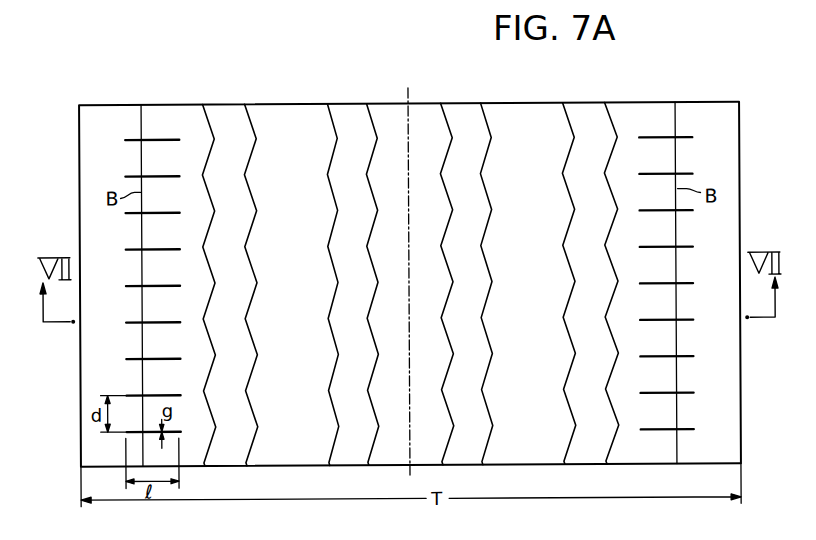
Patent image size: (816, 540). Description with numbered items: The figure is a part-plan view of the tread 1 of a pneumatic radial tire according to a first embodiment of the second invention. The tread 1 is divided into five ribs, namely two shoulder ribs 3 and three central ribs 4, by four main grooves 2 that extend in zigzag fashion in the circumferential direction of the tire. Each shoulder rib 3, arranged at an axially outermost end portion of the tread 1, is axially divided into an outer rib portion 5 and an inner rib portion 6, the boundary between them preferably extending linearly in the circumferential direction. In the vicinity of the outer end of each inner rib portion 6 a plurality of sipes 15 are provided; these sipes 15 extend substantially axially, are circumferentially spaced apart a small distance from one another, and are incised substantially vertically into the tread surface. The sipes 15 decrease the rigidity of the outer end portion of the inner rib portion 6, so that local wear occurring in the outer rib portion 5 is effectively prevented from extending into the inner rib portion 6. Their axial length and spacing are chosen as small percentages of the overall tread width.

The tread 1 is at (413, 70).
The main groove 2 is at (227, 109).
The shoulder rib 3 is at (200, 88).
The rib 4 is at (293, 109).
The outer rib portion 5 is at (115, 133).
The inner rib portion 6 is at (178, 133).
The sipe 15 is at (134, 286).